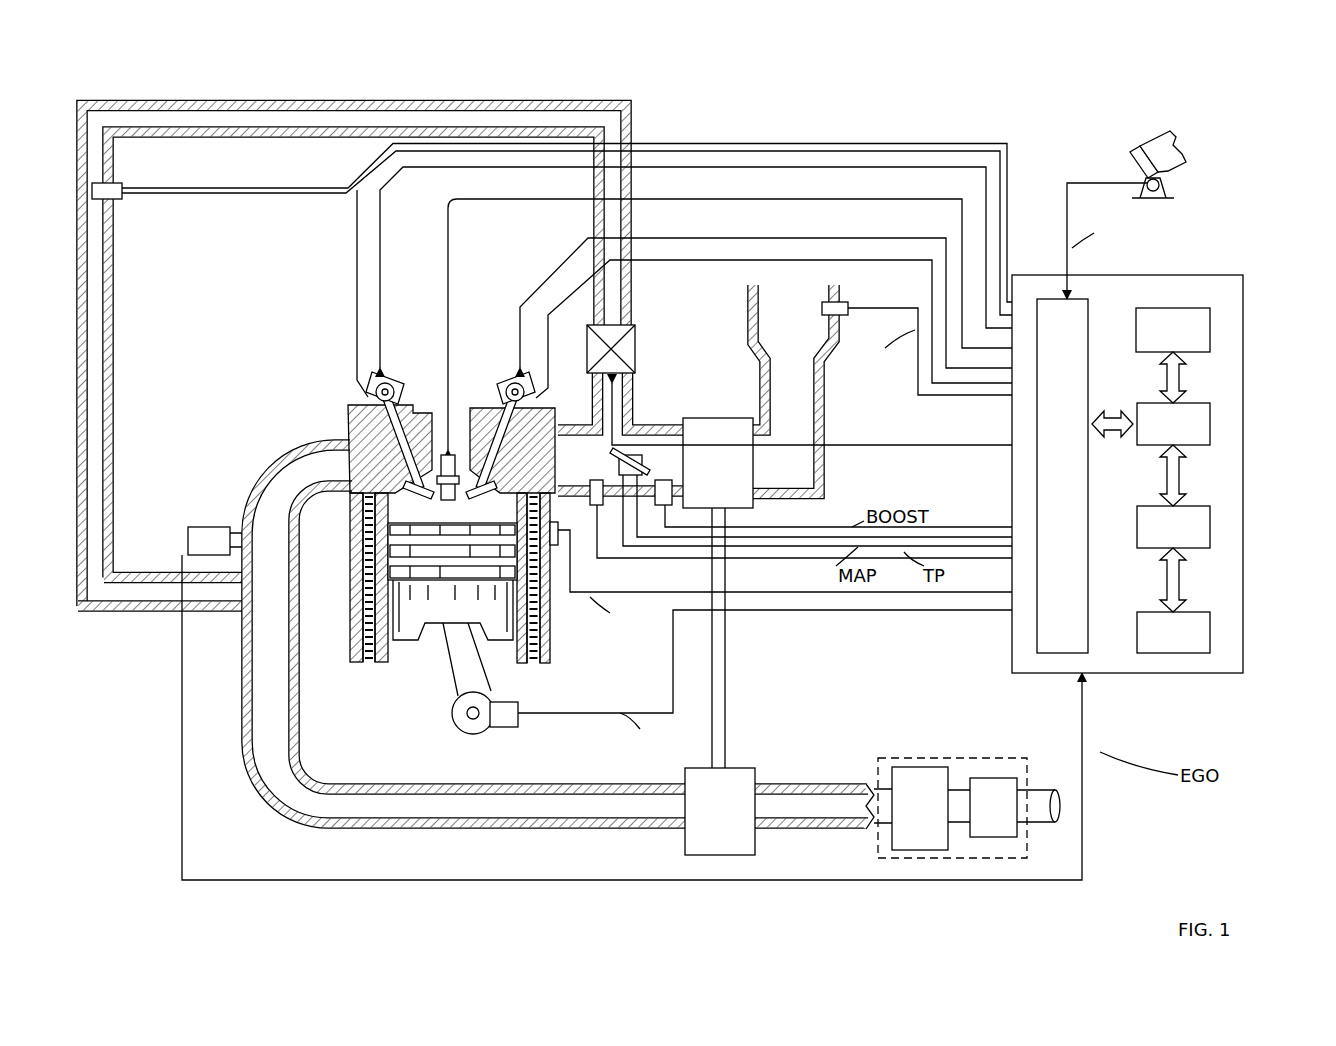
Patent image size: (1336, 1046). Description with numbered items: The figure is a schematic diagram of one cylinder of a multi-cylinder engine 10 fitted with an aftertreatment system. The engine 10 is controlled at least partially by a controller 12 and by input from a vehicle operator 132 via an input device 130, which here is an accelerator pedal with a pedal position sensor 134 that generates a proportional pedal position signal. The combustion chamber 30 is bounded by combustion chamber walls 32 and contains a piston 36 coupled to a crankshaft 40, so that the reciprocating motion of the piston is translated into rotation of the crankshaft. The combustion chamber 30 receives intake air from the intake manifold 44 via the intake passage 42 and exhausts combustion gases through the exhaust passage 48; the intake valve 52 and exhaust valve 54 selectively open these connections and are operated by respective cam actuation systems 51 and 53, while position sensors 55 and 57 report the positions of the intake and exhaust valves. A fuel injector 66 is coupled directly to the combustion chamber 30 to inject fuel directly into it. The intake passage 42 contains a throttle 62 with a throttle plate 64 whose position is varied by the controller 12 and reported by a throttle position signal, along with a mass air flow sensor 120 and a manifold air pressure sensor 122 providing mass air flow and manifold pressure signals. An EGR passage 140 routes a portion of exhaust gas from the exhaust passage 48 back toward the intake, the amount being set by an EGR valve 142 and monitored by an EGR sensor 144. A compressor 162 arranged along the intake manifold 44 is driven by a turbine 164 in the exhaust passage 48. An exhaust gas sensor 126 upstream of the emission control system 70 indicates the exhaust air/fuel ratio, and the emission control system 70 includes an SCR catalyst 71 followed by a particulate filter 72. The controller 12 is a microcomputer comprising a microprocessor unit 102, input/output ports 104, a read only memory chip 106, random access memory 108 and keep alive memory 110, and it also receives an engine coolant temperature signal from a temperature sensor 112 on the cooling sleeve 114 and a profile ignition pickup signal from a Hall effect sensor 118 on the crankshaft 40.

The engine 10 is at (278, 356).
The controller 12 is at (1171, 462).
The combustion chamber 30 is at (372, 552).
The combustion chamber walls 32 is at (396, 650).
The piston 36 is at (435, 610).
The crankshaft 40 is at (462, 731).
The intake passage 42 is at (793, 389).
The intake manifold 44 is at (620, 467).
The exhaust passage 48 is at (560, 637).
The cam actuation system 51 is at (505, 372).
The intake valve 52 is at (500, 484).
The cam actuation system 53 is at (400, 360).
The exhaust valve 54 is at (398, 478).
The position sensor 55 is at (536, 398).
The position sensor 57 is at (368, 386).
The throttle 62 is at (632, 449).
The throttle plate 64 is at (640, 474).
The fuel injector 66 is at (452, 448).
The emission control system 70 is at (952, 762).
The SCR catalyst 71 is at (920, 808).
The particulate filter 72 is at (993, 807).
The microprocessor unit 102 is at (1212, 425).
The input/output ports 104 is at (1092, 310).
The read only memory chip 106 is at (1212, 322).
The random access memory 108 is at (1212, 528).
The keep alive memory 110 is at (1212, 632).
The temperature sensor 112 is at (558, 547).
The cooling sleeve 114 is at (553, 612).
The Hall effect sensor 118 is at (512, 728).
The mass air flow sensor 120 is at (840, 302).
The manifold air pressure sensor 122 is at (594, 480).
The exhaust gas sensor 126 is at (188, 533).
The input device 130 is at (1186, 206).
The vehicle operator 132 is at (1184, 154).
The pedal position sensor 134 is at (1165, 190).
The EGR passage 140 is at (370, 103).
The EGR valve 142 is at (636, 360).
The EGR sensor 144 is at (122, 199).
The compressor 162 is at (718, 593).
The turbine 164 is at (720, 811).